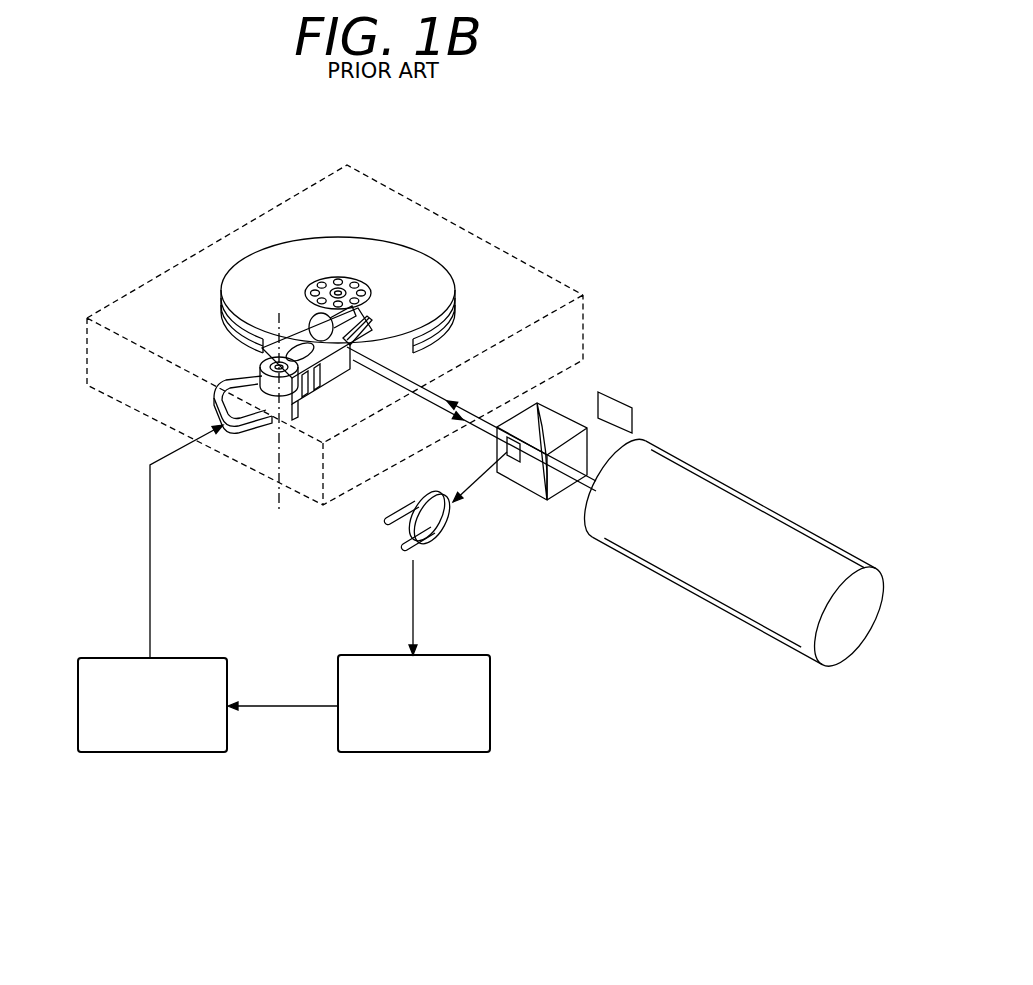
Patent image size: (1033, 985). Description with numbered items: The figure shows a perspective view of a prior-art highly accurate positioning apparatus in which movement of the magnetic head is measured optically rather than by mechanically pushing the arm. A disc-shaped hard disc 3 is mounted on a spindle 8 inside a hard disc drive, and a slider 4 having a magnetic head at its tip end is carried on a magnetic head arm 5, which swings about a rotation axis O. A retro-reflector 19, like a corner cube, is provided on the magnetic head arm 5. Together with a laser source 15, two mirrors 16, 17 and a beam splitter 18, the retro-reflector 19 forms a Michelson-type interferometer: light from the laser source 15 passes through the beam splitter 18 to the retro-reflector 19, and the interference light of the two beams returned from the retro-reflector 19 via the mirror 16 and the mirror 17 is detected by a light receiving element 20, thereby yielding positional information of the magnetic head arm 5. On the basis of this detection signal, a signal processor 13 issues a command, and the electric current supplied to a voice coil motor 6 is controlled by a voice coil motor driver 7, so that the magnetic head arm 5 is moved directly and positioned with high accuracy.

The rotation axis O is at (233, 322).
The hard disc 3 is at (392, 250).
The slider 4 is at (367, 320).
The magnetic head arm 5 is at (327, 383).
The voice coil motor 6 is at (222, 413).
The voice coil motor driver 7 is at (178, 755).
The spindle 8 is at (337, 287).
The signal processor 13 is at (441, 757).
The laser source 15 is at (757, 513).
The mirror 16 is at (623, 398).
The mirror 17 is at (510, 470).
The beam splitter 18 is at (537, 485).
The retro-reflector 19 is at (290, 322).
The light receiving element 20 is at (440, 538).